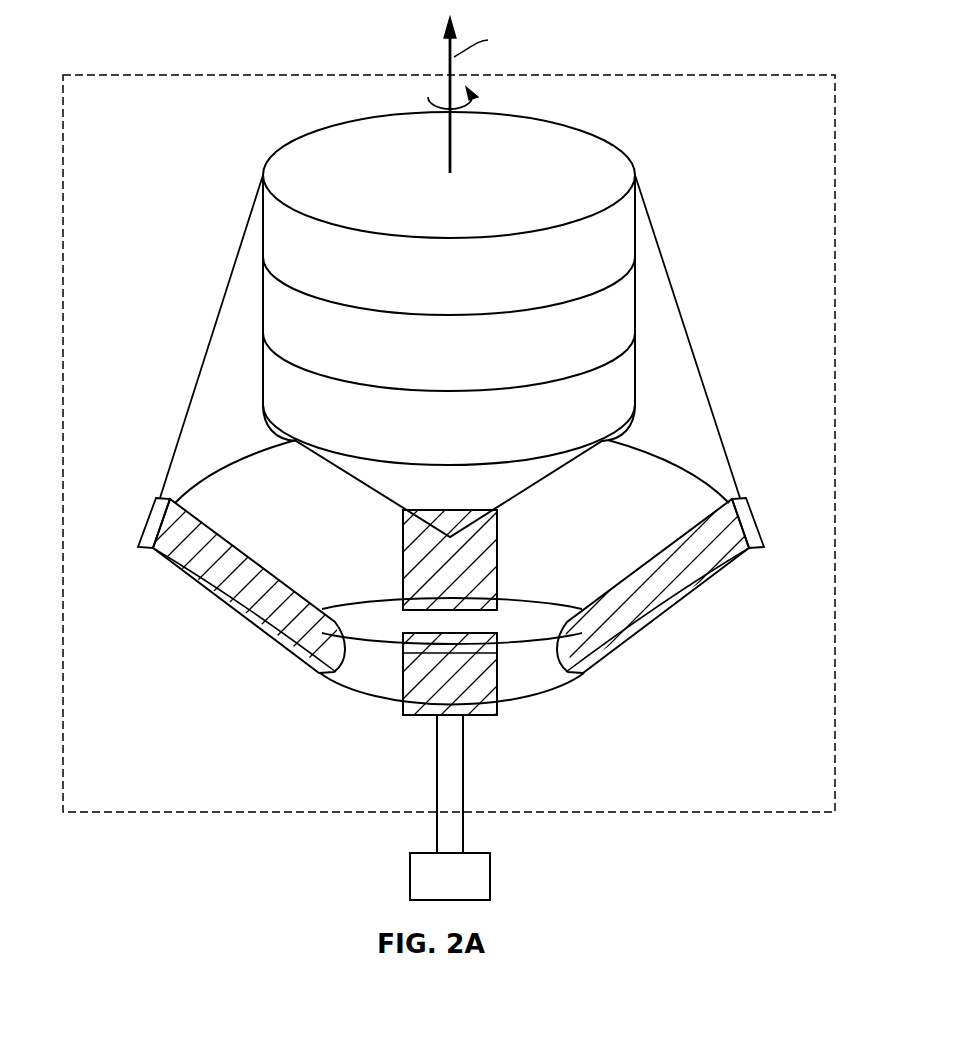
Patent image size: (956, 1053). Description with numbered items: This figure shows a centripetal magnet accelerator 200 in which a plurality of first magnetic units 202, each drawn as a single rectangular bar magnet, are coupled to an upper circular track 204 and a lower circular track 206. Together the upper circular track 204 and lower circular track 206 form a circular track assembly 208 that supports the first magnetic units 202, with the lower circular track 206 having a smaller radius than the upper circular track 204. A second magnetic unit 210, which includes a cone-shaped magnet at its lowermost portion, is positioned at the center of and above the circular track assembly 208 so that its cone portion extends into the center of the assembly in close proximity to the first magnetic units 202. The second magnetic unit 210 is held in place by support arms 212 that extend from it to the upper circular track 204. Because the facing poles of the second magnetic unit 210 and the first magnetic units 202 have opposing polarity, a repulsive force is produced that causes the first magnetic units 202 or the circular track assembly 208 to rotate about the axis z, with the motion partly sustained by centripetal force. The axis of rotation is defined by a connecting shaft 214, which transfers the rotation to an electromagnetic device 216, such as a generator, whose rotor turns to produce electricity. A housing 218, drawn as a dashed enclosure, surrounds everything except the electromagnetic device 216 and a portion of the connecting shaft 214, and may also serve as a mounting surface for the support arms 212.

The accelerator 200 is at (721, 60).
The first magnetic units 202 is at (745, 508).
The upper circular track 204 is at (222, 466).
The lower circular track 206 is at (343, 688).
The circular track assembly 208 is at (148, 443).
The second magnetic unit 210 is at (607, 140).
The support arms 212 is at (697, 318).
The connecting shaft 214 is at (465, 773).
The electromagnetic device 216 is at (492, 878).
The housing 218 is at (238, 814).